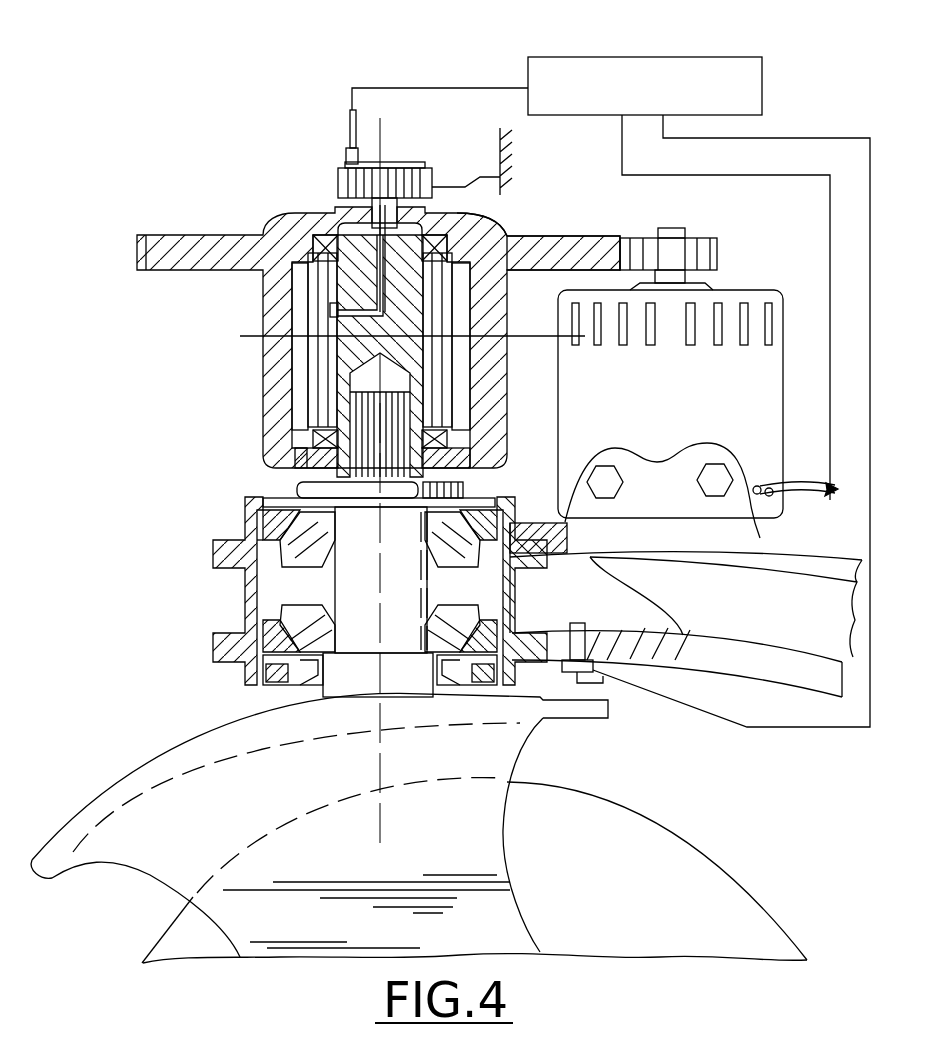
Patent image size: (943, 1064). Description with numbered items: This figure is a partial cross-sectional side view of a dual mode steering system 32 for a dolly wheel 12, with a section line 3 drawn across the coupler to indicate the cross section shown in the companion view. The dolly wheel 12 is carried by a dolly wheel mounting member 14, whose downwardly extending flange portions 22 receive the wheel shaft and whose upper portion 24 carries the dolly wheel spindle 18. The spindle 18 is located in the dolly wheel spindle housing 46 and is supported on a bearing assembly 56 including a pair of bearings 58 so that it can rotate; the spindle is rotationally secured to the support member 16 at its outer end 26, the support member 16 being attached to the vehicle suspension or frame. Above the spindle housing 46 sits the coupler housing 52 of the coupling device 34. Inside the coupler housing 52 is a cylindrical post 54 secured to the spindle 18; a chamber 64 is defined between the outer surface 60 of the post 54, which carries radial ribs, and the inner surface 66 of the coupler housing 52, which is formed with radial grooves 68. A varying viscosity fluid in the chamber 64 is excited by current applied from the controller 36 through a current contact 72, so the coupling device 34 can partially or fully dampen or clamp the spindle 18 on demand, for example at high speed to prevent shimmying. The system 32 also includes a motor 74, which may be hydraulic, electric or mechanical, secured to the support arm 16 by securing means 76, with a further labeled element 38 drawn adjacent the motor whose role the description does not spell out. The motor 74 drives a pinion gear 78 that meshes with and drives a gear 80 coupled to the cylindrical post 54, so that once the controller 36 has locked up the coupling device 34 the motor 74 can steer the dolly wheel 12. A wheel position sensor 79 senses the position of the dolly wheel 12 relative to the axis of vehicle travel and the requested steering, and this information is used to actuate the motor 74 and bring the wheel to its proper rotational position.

The dolly wheel 12 is at (655, 836).
The dolly wheel mounting member 14 is at (489, 810).
The support member 16 is at (752, 627).
The dolly wheel spindle 18 is at (343, 574).
The flange portions 22 is at (233, 920).
The upper portion 24 is at (158, 752).
The outer end 26 is at (573, 560).
The dual mode steering system 32 is at (622, 223).
The coupling device 34 is at (248, 274).
The controller 36 is at (683, 57).
The actuator housing 38 is at (777, 263).
The dolly wheel spindle housing 46 is at (243, 614).
The coupler housing 52 is at (293, 397).
The cylindrical post 54 is at (343, 282).
The bearing assembly 56 is at (318, 592).
The bearings 58 is at (470, 622).
The outer surface 60 is at (497, 226).
The chamber 64 is at (448, 420).
The inner surface 66 is at (292, 355).
The radial grooves 68 is at (295, 432).
The current contact 72 is at (395, 162).
The motor 74 is at (774, 392).
The securing means 76 is at (703, 475).
The pinion gear 78 is at (717, 253).
The wheel position sensor 79 is at (607, 676).
The gear 80 is at (588, 240).
The section line 3- 3 is at (245, 378).